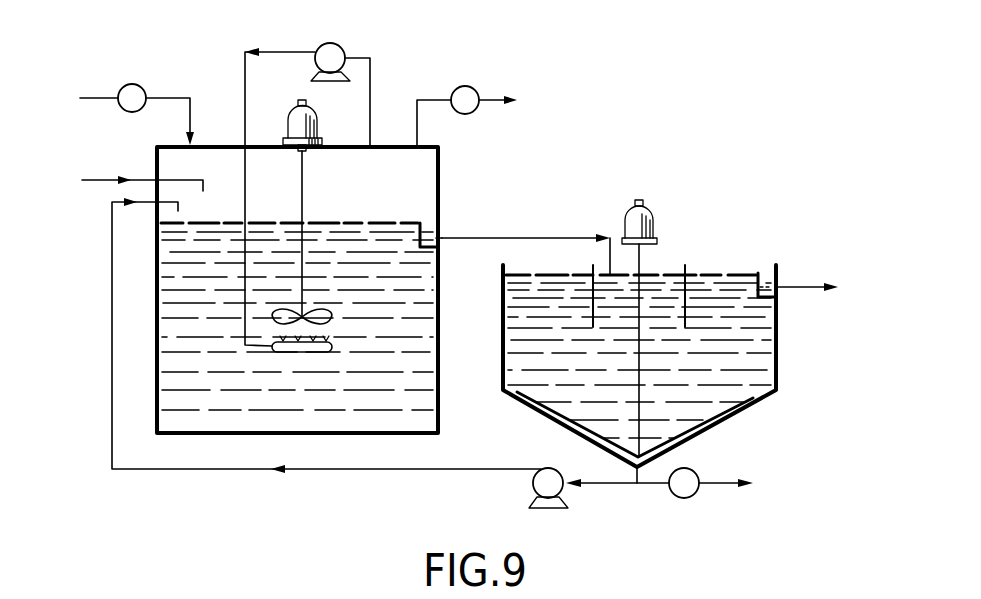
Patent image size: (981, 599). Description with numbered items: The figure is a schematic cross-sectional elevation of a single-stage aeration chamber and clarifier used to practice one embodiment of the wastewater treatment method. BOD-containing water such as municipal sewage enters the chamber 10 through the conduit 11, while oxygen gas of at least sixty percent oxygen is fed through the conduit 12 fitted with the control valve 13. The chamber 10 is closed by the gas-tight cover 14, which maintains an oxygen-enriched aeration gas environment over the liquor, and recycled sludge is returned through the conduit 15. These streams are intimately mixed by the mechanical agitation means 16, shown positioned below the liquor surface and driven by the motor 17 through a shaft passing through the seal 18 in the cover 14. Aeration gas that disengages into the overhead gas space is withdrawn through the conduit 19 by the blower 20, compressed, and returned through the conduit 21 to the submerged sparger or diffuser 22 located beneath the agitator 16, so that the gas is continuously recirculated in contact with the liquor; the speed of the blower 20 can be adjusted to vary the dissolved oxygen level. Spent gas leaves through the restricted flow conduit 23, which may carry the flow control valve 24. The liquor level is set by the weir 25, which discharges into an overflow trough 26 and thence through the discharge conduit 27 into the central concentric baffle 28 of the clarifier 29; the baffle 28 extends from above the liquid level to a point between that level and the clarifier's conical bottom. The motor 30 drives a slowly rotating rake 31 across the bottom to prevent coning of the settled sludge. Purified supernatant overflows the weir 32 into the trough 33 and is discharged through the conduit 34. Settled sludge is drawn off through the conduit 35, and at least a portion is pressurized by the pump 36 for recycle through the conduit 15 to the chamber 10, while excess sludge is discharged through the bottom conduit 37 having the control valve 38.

The chamber 10 is at (156, 315).
The conduit 11 is at (91, 179).
The conduit 12 is at (88, 95).
The control valve 13 is at (135, 85).
The gas-tight cover 14 is at (206, 143).
The conduit 15 is at (112, 432).
The mechanical agitation means 16 is at (330, 316).
The motor 17 is at (296, 121).
The seal 18 is at (298, 148).
The conduit 19 is at (370, 60).
The blower 20 is at (327, 45).
The conduit 21 is at (283, 52).
The submerged sparger or diffuser 22 is at (295, 353).
The restricted flow conduit 23 is at (420, 98).
The flow control valve 24 is at (470, 79).
The weir 25 is at (420, 226).
The overflow outlet 26 is at (431, 236).
The discharge conduit 27 is at (537, 238).
The central concentric baffle 28 is at (686, 272).
The clarifier 29 is at (768, 360).
The motor 30 is at (630, 205).
The rake 31 is at (715, 417).
The weir 32 is at (760, 273).
The trough 33 is at (763, 287).
The conduit 34 is at (800, 283).
The conduit 35 is at (622, 485).
The pump 36 is at (545, 468).
The bottom conduit 37 is at (658, 485).
The control valve 38 is at (692, 497).